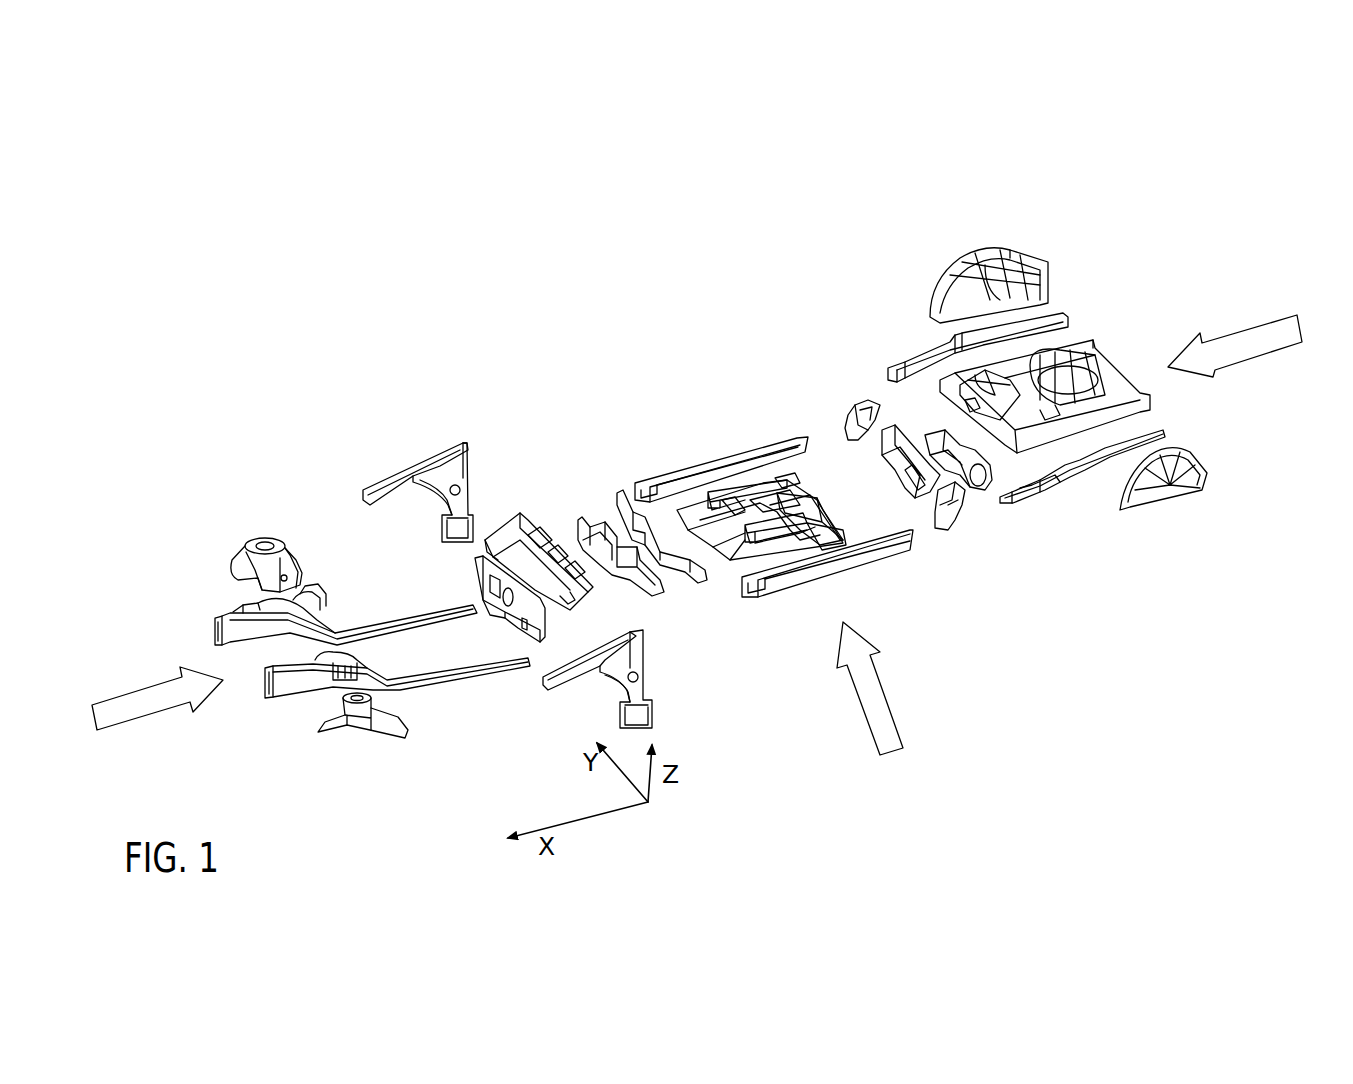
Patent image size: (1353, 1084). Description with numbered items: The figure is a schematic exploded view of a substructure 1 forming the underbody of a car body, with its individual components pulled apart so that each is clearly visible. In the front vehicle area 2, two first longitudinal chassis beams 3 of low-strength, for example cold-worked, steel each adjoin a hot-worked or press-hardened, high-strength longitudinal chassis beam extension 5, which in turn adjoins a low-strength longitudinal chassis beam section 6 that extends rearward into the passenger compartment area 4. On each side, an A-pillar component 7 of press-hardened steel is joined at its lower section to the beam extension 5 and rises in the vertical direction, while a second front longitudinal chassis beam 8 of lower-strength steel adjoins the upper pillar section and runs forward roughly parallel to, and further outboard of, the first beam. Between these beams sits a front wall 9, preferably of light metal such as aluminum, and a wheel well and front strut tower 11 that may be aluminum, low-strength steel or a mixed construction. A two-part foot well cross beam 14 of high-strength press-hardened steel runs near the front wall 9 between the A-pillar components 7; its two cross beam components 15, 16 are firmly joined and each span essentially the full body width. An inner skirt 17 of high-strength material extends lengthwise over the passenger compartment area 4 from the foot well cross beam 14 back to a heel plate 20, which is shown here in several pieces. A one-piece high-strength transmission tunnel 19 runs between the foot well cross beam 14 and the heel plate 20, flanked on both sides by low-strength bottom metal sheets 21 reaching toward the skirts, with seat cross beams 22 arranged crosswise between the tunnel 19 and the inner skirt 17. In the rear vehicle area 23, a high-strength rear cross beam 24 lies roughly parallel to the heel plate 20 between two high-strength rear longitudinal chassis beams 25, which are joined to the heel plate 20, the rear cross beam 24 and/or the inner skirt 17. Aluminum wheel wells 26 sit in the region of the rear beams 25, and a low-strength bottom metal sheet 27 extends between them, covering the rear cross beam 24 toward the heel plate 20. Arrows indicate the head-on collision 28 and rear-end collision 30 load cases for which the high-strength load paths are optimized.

The substructure 1 is at (762, 330).
The front vehicle area 2 is at (332, 418).
The first longitudinal chassis beam 3 is at (237, 589).
The passenger compartment area 4 is at (690, 400).
The longitudinal chassis beam extension 5 is at (332, 632).
The longitudinal chassis beam section 6 is at (403, 620).
The A-pillar component 7 is at (462, 470).
The second front longitudinal chassis beam 8 is at (395, 468).
The front wall 9 is at (479, 583).
The wheel well and front strut tower 11 is at (258, 544).
The foot well cross beam 14 is at (603, 478).
The cross beam component 15 is at (658, 590).
The cross beam component 16 is at (703, 571).
The inner skirt 17 is at (708, 463).
The transmission tunnel 19 is at (813, 510).
The heel plate 20 is at (955, 490).
The bottom metal sheet 21 is at (787, 487).
The seat cross beam 22 is at (760, 484).
The rear vehicle area 23 is at (1040, 235).
The rear cross beam 24 is at (983, 478).
The rear longitudinal chassis beam 25 is at (1063, 315).
The wheel well 26 is at (978, 262).
The bottom metal sheet 27 is at (1108, 380).
The head-on collision 28 is at (110, 710).
The rear-end collision 30 is at (1277, 325).